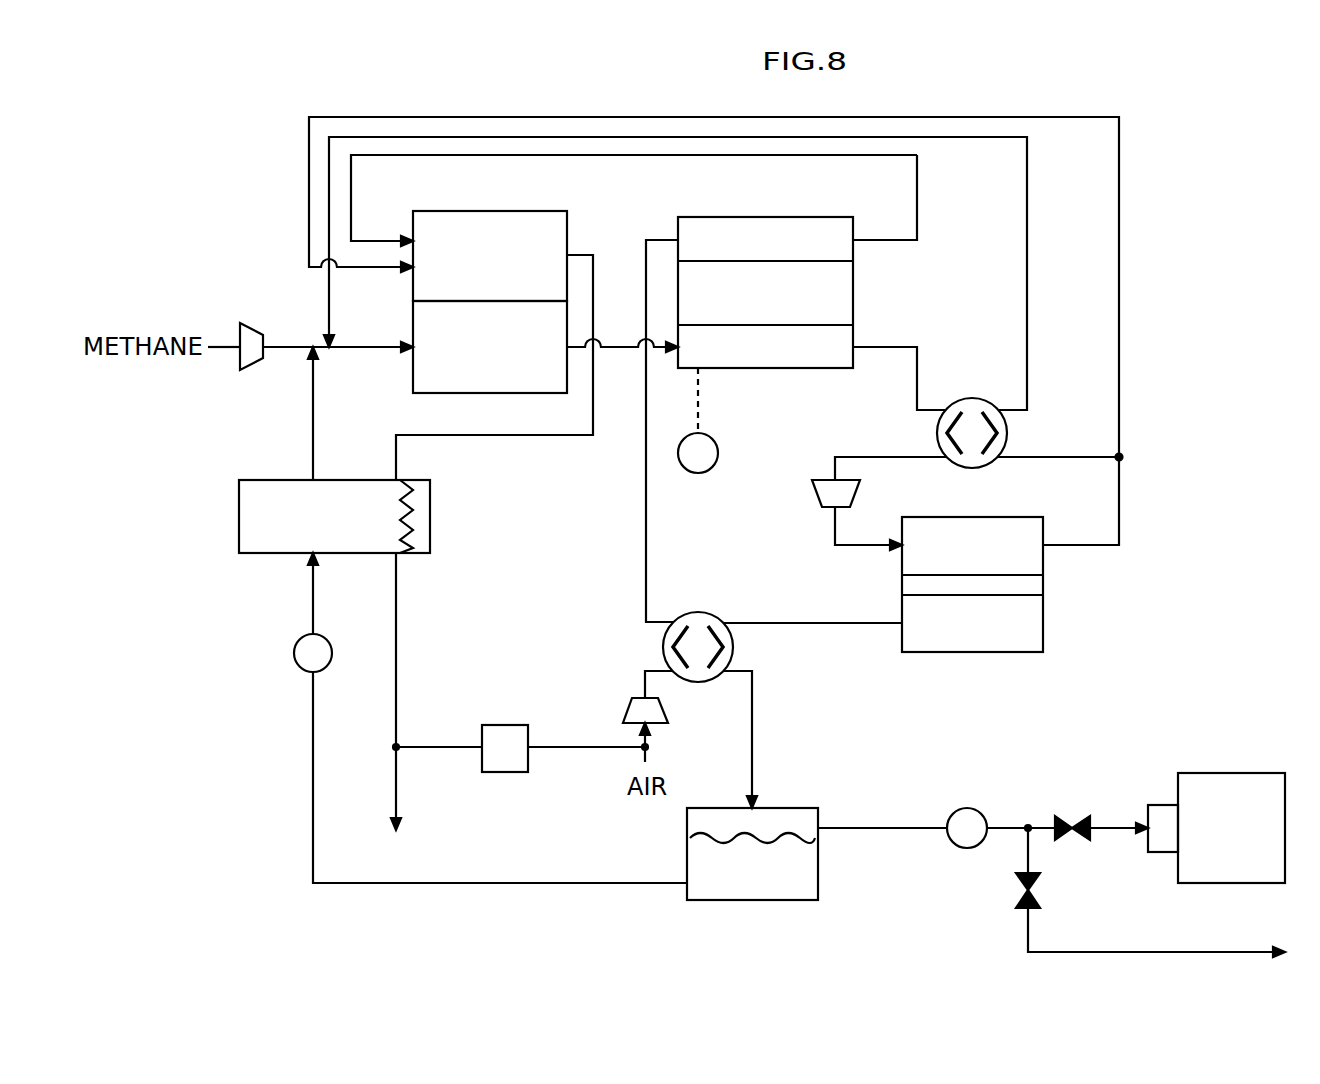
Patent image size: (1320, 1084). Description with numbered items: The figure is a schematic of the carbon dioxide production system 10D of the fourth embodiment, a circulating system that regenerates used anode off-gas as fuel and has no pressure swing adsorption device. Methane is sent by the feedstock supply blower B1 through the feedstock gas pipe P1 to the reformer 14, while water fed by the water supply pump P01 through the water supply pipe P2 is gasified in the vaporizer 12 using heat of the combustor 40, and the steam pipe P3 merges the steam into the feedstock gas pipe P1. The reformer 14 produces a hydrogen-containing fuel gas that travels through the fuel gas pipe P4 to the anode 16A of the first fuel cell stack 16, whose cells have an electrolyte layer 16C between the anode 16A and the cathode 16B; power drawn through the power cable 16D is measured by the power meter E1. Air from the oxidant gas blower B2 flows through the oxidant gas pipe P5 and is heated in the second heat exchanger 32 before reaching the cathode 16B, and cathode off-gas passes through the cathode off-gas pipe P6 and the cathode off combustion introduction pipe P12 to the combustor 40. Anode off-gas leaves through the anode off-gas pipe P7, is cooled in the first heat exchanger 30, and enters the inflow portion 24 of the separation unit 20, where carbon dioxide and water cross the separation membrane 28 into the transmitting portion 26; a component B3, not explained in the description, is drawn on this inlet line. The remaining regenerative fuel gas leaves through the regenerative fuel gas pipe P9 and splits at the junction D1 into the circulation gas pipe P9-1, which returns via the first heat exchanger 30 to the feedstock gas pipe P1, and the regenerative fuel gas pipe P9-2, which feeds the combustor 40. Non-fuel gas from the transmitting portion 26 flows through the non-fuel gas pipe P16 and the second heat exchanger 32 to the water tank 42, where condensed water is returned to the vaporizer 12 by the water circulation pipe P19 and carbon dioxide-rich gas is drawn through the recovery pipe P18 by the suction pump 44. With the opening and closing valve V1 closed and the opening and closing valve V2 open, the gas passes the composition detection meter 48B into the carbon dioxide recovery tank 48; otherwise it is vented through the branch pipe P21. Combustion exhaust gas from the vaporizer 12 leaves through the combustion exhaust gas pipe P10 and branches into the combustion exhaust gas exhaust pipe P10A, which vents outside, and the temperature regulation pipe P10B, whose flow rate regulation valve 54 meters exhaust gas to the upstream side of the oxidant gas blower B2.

The carbon dioxide production system 10D is at (1243, 110).
The feedstock supply blower B1 is at (252, 323).
The feedstock gas pipe P1 is at (298, 347).
The combustor 40 is at (413, 224).
The reformer 14 is at (413, 327).
The first fuel cell stack 16 is at (838, 212).
The cathode 16B is at (748, 217).
The electrolyte layer 16C is at (853, 313).
The anode 16A is at (820, 370).
The power cable 16D is at (698, 412).
The power meter E1 is at (718, 453).
The fuel gas pipe P4 is at (617, 350).
The combustion exhaust gas pipe P10 is at (536, 435).
The combustion exhaust gas exhaust pipe P10A is at (396, 795).
The temperature regulation pipe P10B is at (438, 747).
The flow rate regulation valve 54 is at (510, 725).
The vaporizer 12 is at (430, 517).
The steam pipe P3 is at (313, 420).
The water supply pipe P2 is at (313, 602).
The water supply pump P01 is at (294, 653).
The water circulation pipe P19 is at (488, 883).
The oxidant gas pipe P5 is at (646, 518).
The second heat exchanger 32 is at (663, 647).
The oxidant gas blower B2 is at (623, 710).
The non-fuel gas pipe P16 is at (823, 623).
The water tank 42 is at (687, 862).
The recovery pipe P18 is at (893, 828).
The suction pump 44 is at (967, 848).
The opening and closing valve V2 is at (1064, 816).
The composition detection meter 48B is at (1160, 852).
The carbon dioxide recovery tank 48 is at (1235, 883).
The opening and closing valve V1 is at (1040, 900).
The branch pipe P21 is at (1028, 940).
The anode off-gas pipe P7 is at (917, 392).
The first heat exchanger 30 is at (1007, 433).
The circulation gas pipe P9-1 is at (1027, 333).
The cathode off-gas pipe P6 is at (917, 208).
The cathode off combustion introduction pipe P12 is at (625, 156).
The junction D1 is at (1119, 457).
The blower B3 is at (812, 493).
The separation unit 20 is at (1066, 588).
The inflow portion 24 is at (1016, 517).
The separation membrane 28 is at (902, 588).
The transmitting portion 26 is at (975, 652).
The regenerative fuel gas pipe P9 is at (1119, 503).
The regenerative fuel gas pipe P9-2 is at (1045, 117).